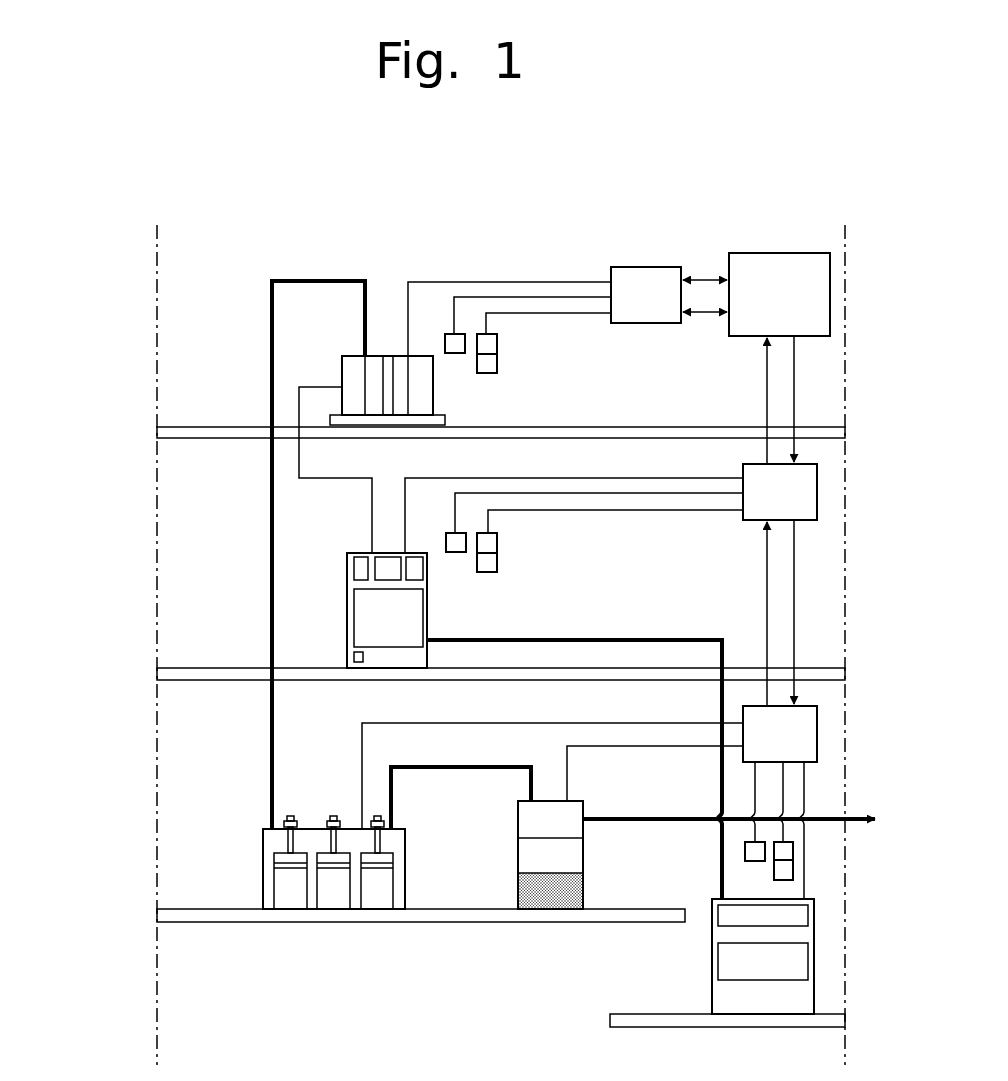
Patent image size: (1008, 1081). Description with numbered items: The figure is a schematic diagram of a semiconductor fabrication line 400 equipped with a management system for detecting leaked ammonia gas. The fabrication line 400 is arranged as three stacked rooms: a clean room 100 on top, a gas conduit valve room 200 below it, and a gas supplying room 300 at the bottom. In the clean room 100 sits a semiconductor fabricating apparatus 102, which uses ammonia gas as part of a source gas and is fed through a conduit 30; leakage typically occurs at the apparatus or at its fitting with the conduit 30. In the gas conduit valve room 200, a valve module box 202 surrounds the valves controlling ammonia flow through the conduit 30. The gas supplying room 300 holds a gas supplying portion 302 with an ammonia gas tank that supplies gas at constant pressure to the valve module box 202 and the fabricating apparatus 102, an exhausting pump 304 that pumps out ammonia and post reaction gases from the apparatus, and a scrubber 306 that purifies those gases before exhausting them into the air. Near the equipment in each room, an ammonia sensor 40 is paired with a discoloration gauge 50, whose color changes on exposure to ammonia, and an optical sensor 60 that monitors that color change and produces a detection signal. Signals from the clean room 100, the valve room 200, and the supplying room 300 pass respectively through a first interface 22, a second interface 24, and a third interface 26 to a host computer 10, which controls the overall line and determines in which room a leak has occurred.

The host computer 10 is at (772, 253).
The first interface 22 is at (647, 267).
The second interface 24 is at (817, 491).
The third interface 26 is at (817, 732).
The conduit 30 is at (648, 638).
The ammonia sensor 40 is at (445, 344).
The discoloration gauge 50 is at (497, 363).
The optical sensor 60 is at (497, 343).
The clean room 100 is at (180, 353).
The semiconductor fabricating apparatus 102 is at (433, 395).
The gas conduit valve room 200 is at (180, 576).
The valve module box 202 is at (427, 608).
The gas supplying room 300 is at (180, 799).
The gas supplying portion 302 is at (712, 966).
The exhausting pump 304 is at (263, 870).
The scrubber 306 is at (518, 853).
The semiconductor fabrication line 400 is at (88, 355).